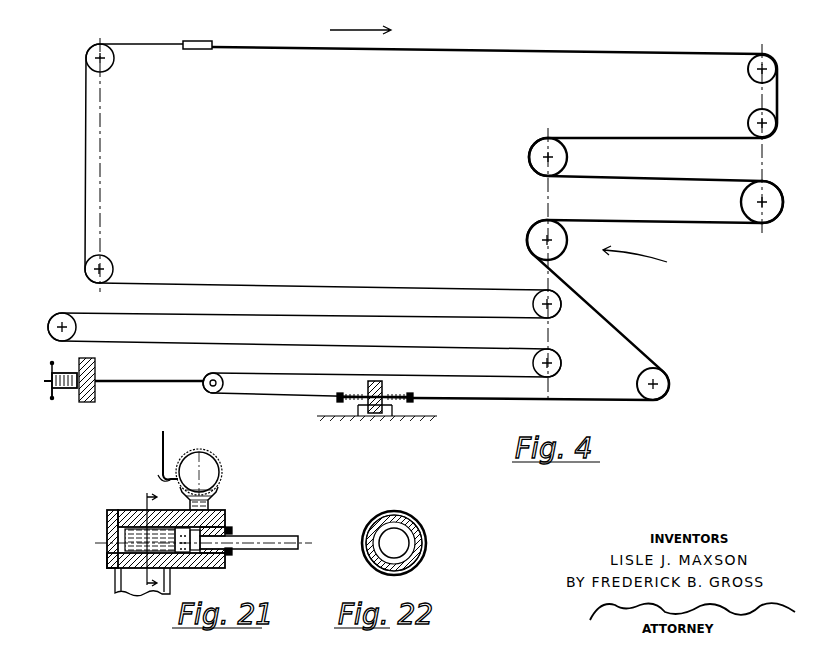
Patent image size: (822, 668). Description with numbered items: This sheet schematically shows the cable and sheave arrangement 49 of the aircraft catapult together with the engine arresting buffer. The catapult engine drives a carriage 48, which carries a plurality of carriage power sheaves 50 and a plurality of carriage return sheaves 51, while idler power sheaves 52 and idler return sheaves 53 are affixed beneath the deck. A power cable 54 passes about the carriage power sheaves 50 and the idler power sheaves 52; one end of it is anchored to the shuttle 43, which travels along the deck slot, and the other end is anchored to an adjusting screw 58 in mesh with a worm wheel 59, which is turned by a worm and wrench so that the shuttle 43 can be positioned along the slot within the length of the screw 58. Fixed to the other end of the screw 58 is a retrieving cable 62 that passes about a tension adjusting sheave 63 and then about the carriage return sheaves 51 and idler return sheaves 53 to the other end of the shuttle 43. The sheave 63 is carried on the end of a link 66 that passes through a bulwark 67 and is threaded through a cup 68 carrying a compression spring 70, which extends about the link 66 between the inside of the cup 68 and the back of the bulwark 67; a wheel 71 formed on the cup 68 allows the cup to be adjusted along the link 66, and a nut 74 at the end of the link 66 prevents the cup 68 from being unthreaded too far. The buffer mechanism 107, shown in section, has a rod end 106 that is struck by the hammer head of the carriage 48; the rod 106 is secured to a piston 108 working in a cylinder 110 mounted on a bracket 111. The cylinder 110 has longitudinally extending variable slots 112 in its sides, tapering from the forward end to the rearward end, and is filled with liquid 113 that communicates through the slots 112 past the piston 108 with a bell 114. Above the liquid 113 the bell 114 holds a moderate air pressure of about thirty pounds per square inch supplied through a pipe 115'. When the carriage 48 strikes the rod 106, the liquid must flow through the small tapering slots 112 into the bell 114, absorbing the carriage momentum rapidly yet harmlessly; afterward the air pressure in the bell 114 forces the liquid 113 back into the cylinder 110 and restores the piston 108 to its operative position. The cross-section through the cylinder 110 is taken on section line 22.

In FIG. 4, the shuttle 43 is at (196, 50).
In FIG. 4, the carriage 48 is at (546, 192).
In FIG. 4, the sheave arrangement 49 is at (639, 262).
In FIG. 4, the carriage power sheaves 50 is at (568, 157).
In FIG. 4, the carriage return sheaves 51 is at (557, 352).
In FIG. 4, the idler power sheaves 52 is at (752, 118).
In FIG. 4, the idler return sheaves 53 is at (110, 68).
In FIG. 4, the power cable 54 is at (516, 52).
In FIG. 4, the adjusting screw 58 is at (396, 398).
In FIG. 4, the worm wheel 59 is at (352, 396).
In FIG. 4, the retrieving cable 62 is at (340, 285).
In FIG. 4, the tension adjusting sheave 63 is at (207, 375).
In FIG. 4, the link 66 is at (140, 380).
In FIG. 4, the bulwark 67 is at (96, 398).
In FIG. 4, the cup 68 is at (68, 389).
In FIG. 4, the compression spring 70 is at (60, 374).
In FIG. 4, the wheel 71 is at (54, 400).
In FIG. 4, the nut 74 is at (48, 386).
In FIG. 21, the rod end 106 is at (266, 536).
In FIG. 21, the carriage buffer mechanism 107 is at (248, 510).
In FIG. 21, the piston 108 is at (200, 566).
In FIG. 21, the cylinder 110 is at (188, 556).
In FIG. 22, the cylinder 110 is at (426, 558).
In FIG. 21, the bracket 111 is at (112, 510).
In FIG. 22, the bracket 111 is at (376, 563).
In FIG. 22, the variable slots 112 is at (412, 542).
In FIG. 21, the liquid 113 is at (108, 551).
In FIG. 21, the bell 114 is at (216, 460).
In FIG. 21, the pipe 115' is at (190, 448).
In FIG. 21, the section line 22 is at (137, 538).